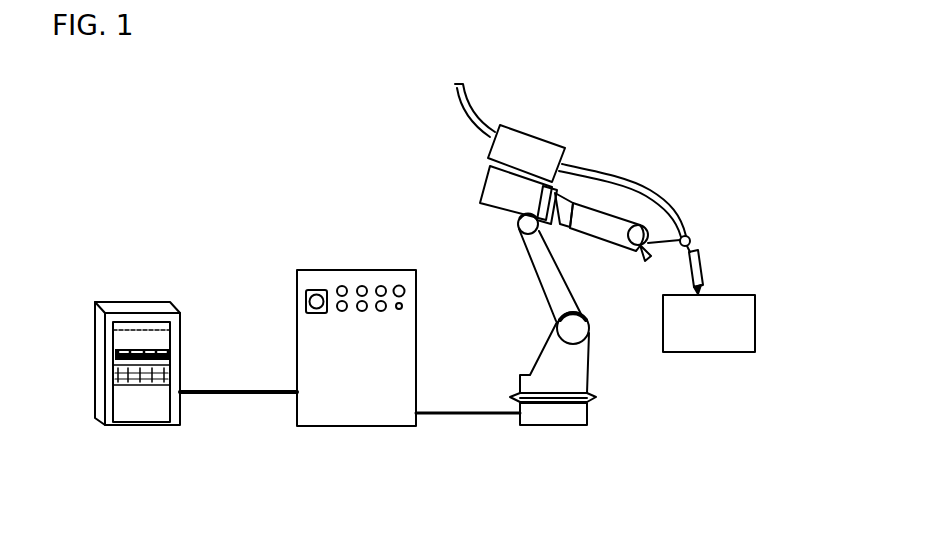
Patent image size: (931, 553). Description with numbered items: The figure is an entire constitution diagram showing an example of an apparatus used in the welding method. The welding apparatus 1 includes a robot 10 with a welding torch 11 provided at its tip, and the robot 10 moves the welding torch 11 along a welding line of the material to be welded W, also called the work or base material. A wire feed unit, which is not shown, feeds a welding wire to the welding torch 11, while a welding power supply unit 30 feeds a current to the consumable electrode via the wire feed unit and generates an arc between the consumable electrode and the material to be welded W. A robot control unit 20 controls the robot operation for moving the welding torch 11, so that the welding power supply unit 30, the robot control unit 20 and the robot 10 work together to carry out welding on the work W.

The welding apparatus 1 is at (242, 163).
The robot 10 is at (480, 203).
The welding torch 11 is at (702, 258).
The robot control unit 20 is at (318, 270).
The welding power supply unit 30 is at (150, 300).
The material to be welded W is at (755, 318).